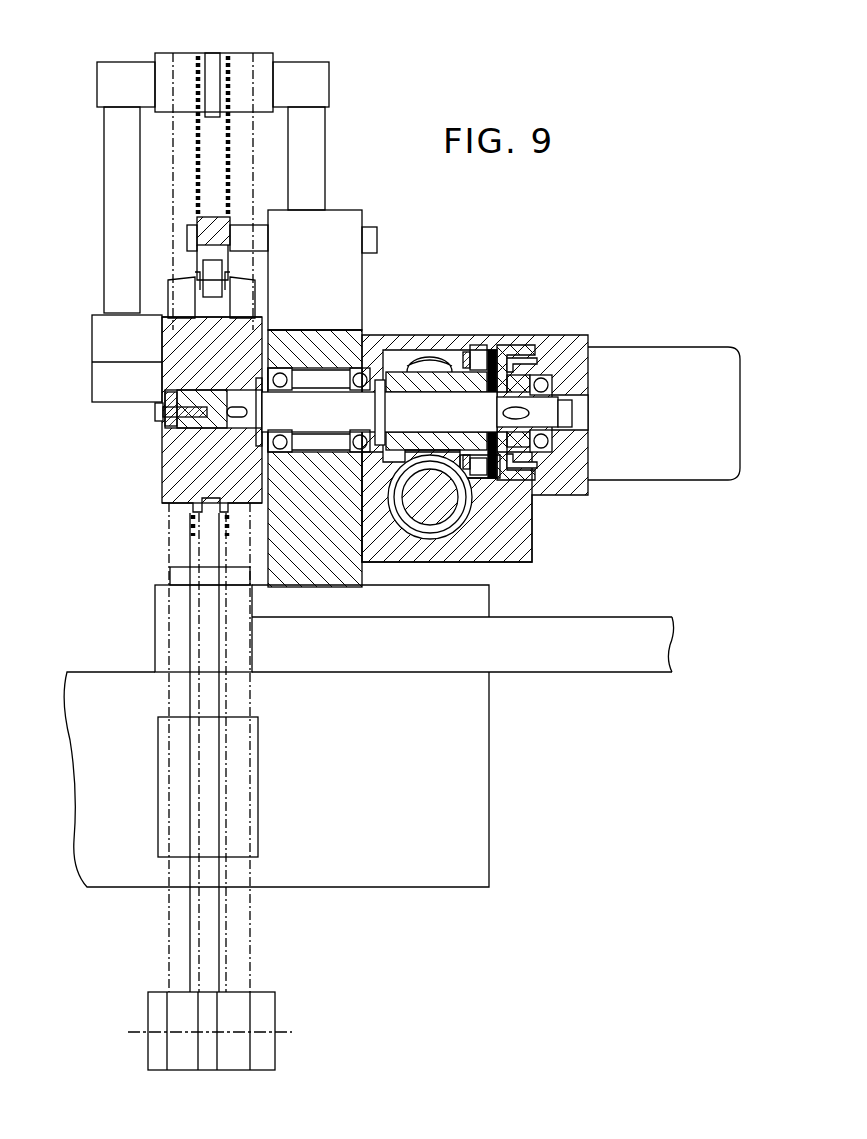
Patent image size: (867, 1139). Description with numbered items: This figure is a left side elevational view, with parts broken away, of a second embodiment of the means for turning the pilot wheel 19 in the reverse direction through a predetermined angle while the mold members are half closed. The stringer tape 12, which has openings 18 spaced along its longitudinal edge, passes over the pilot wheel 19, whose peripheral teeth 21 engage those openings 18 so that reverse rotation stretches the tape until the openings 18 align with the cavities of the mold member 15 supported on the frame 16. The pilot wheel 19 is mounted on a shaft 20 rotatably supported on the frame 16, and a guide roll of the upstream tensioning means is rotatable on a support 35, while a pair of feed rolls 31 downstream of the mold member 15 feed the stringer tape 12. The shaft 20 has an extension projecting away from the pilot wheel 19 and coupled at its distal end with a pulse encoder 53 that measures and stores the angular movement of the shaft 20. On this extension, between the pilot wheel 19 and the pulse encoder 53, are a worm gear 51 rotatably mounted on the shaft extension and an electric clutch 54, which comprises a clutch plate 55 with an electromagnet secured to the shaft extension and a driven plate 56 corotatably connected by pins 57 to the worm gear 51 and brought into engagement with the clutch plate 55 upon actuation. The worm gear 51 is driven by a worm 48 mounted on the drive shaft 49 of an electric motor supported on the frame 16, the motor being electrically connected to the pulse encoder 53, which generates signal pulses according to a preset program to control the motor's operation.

The stringer tape 12 is at (168, 550).
The mold member 15 is at (260, 790).
The frame 16 is at (482, 795).
The openings 18 is at (228, 52).
The pilot wheel 19 is at (162, 480).
The shaft 20 is at (433, 403).
The peripheral teeth 21 is at (193, 505).
The feed rolls 31 is at (275, 1003).
The support 35 is at (113, 200).
The worm 48 is at (460, 512).
The drive shaft 49 is at (440, 512).
The worm gear 51 is at (415, 353).
The pulse encoder 53 is at (647, 358).
The electric clutch 54 is at (483, 342).
The clutch plate 55 is at (507, 340).
The driven plate 56 is at (496, 353).
The pins 57 is at (477, 473).